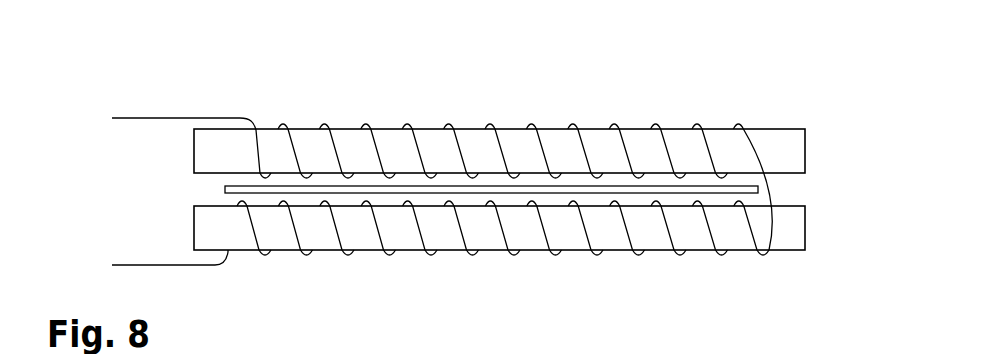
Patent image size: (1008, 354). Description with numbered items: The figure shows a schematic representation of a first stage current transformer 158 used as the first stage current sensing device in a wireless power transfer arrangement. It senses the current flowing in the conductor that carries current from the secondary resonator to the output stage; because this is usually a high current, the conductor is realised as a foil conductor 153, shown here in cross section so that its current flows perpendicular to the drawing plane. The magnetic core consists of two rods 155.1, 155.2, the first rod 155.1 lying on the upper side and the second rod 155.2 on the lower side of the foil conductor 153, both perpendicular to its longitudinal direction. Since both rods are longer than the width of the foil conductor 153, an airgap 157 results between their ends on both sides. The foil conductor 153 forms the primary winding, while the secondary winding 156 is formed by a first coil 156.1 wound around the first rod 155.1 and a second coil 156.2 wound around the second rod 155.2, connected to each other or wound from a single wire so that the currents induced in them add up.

The first stage current transformer 158 is at (755, 78).
The first rod 155.1 is at (806, 140).
The second rod 155.2 is at (806, 227).
The foil conductor 153 is at (225, 190).
The airgap 157 is at (200, 194).
The secondary winding 156 is at (197, 117).
The first coil 156.1 is at (488, 125).
The second coil 156.2 is at (472, 253).